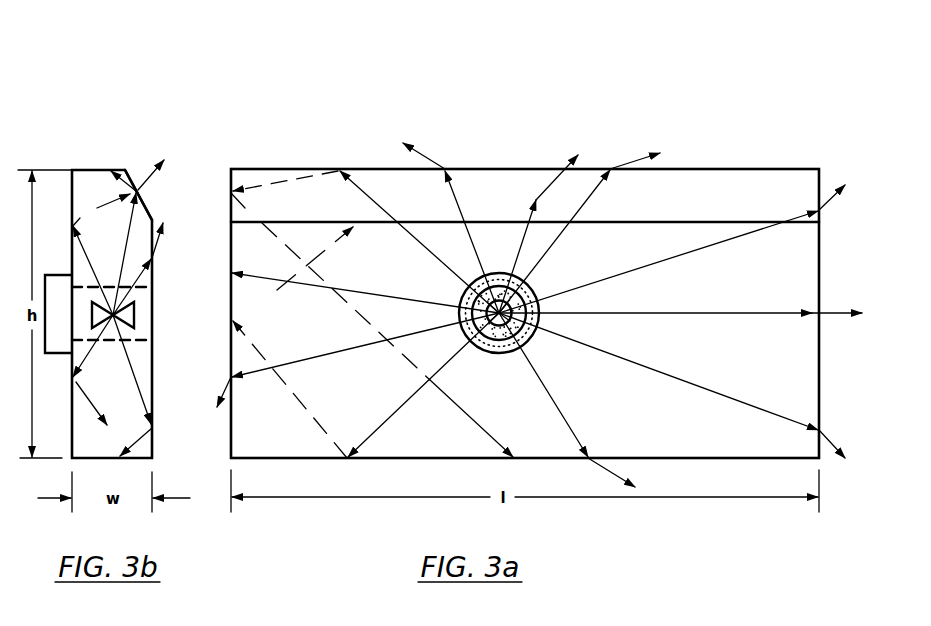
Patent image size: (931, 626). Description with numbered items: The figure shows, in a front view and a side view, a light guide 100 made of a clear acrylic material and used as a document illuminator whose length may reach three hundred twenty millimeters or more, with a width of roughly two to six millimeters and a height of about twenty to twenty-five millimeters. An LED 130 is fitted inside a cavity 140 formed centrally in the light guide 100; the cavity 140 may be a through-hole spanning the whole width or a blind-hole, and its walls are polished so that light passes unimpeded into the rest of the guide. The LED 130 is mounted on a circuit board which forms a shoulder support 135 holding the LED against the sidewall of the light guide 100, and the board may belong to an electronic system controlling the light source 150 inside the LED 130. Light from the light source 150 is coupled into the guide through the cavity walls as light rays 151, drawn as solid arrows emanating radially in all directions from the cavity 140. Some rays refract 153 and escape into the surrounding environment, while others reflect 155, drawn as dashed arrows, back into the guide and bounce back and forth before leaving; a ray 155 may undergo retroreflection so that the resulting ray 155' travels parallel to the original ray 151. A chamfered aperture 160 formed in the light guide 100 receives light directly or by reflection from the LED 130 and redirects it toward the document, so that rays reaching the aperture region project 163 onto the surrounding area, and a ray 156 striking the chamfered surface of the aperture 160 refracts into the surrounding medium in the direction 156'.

In FIG. 3a, the light guide 100 is at (594, 65).
In FIG. 3a, the LED 130 is at (528, 337).
In FIG. 3b, the LED 130 is at (132, 305).
In FIG. 3b, the shoulder support 135 is at (58, 302).
In FIG. 3a, the cavity 140 is at (495, 348).
In FIG. 3b, the cavity 140 is at (143, 337).
In FIG. 3a, the light source 150 is at (517, 295).
In FIG. 3a, the light rays 151 is at (395, 378).
In FIG. 3a, the refracting rays 153 is at (532, 342).
In FIG. 3a, the reflecting rays 155 is at (373, 340).
In FIG. 3a, the retroreflected ray 155' is at (324, 258).
In FIG. 3a, the ray striking chamfered surface 156 is at (511, 252).
In FIG. 3a, the refracted direction 156' is at (546, 168).
In FIG. 3a, the chamfered aperture 160 is at (740, 182).
In FIG. 3b, the chamfered aperture 160 is at (97, 208).
In FIG. 3b, the projected rays 163 is at (161, 164).